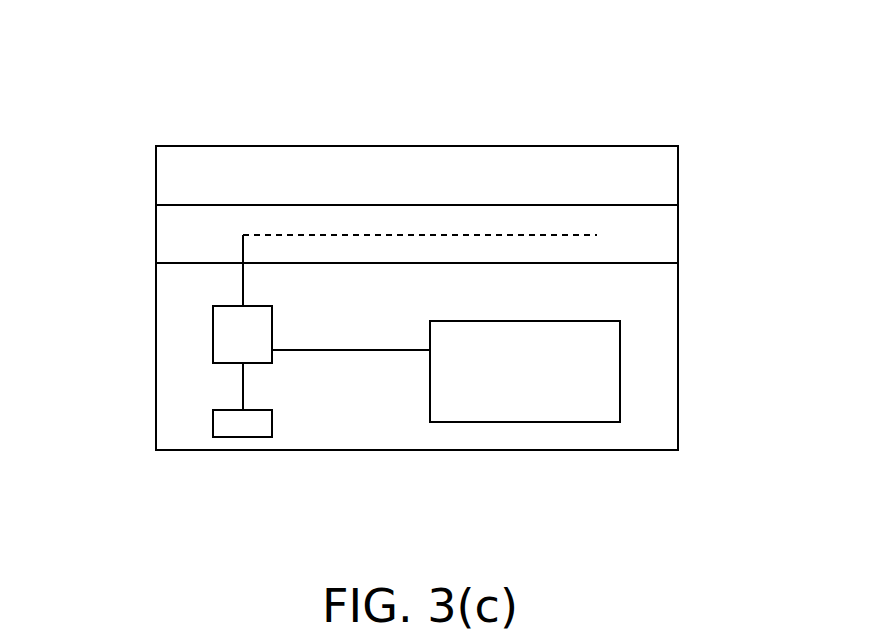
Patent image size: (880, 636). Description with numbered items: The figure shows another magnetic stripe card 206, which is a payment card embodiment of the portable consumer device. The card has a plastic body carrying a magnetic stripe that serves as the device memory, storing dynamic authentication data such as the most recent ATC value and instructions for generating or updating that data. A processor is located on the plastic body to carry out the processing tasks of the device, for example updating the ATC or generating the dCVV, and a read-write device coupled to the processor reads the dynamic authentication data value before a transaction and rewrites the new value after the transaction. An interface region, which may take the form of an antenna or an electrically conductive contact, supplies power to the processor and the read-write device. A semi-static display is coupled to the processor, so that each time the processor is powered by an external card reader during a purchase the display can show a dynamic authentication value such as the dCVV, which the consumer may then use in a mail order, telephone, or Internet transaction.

The magnetic stripe card 206 is at (176, 66).